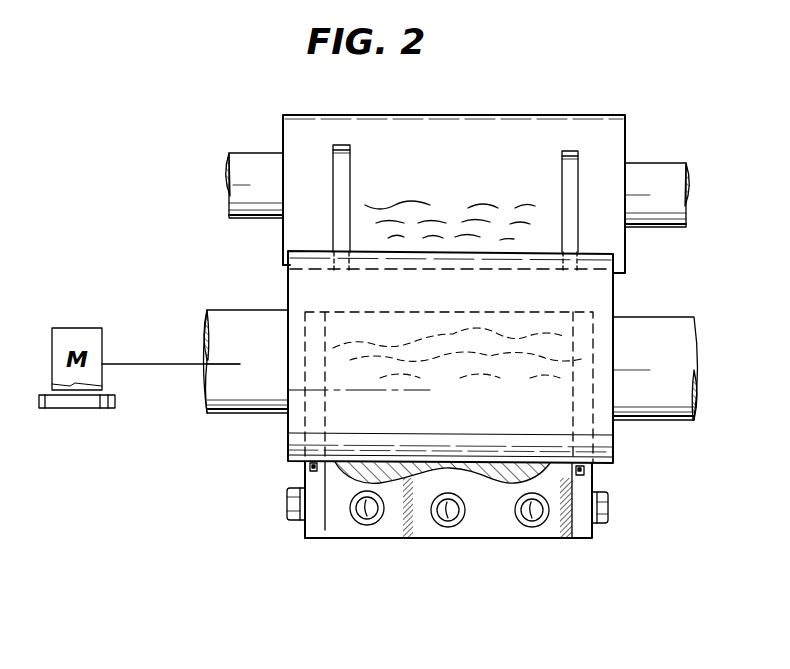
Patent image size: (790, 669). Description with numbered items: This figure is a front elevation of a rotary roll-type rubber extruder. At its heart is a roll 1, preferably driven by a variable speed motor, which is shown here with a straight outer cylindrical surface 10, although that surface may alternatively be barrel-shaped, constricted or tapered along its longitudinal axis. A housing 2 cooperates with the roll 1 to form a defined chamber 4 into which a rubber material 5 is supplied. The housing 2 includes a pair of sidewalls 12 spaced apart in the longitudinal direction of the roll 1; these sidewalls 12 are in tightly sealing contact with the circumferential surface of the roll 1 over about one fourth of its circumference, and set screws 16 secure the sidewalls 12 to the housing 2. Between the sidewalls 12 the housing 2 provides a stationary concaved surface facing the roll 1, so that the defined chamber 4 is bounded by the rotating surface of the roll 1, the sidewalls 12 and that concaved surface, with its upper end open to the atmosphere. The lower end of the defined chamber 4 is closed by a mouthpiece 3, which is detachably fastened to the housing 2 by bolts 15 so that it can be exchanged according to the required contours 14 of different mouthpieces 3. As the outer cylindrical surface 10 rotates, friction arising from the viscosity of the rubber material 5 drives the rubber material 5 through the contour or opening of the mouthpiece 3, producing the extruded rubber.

The roll 1 is at (622, 452).
The housing 2 is at (600, 484).
The mouthpiece 3 is at (491, 522).
The defined chamber 4 is at (470, 312).
The rubber material 5 is at (507, 350).
The outer cylindrical surface 10 is at (612, 300).
The sidewalls 12 is at (313, 527).
The contours 14 is at (426, 464).
The bolts 15 is at (369, 522).
The set screws 16 is at (288, 505).